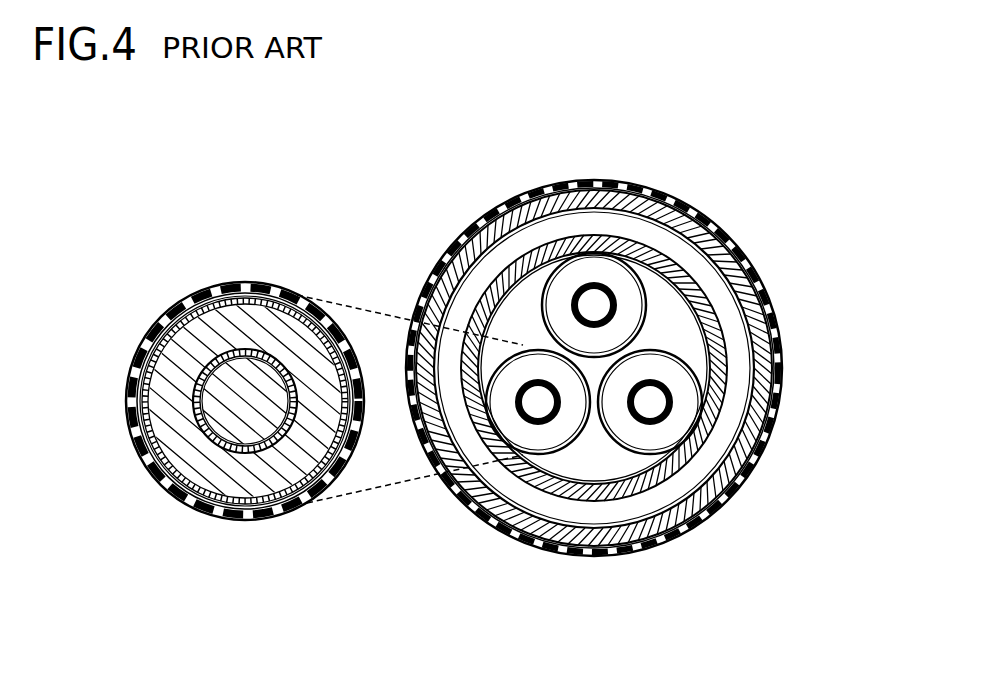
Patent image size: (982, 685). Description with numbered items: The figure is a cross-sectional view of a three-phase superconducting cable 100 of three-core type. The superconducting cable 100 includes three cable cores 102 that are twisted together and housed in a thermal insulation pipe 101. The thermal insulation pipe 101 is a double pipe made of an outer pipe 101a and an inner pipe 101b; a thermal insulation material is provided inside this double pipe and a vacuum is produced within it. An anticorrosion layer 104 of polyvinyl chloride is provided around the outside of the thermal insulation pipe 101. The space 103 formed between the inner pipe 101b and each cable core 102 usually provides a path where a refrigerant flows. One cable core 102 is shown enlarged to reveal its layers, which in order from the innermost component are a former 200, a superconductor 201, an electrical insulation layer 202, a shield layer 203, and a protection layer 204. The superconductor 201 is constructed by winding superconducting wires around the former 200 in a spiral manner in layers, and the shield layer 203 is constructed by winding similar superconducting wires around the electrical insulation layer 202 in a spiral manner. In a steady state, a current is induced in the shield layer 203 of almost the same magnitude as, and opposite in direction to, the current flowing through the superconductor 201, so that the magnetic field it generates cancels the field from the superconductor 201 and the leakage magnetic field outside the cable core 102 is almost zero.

The superconducting cable 100 is at (654, 386).
The thermal insulation pipe 101 is at (659, 339).
The outer pipe 101a is at (727, 283).
The inner pipe 101b is at (687, 220).
The cable core 102 is at (366, 344).
The space 103 is at (693, 347).
The anticorrosion layer 104 is at (779, 429).
The former 200 is at (160, 385).
The superconductor 201 is at (200, 417).
The electrical insulation layer 202 is at (153, 467).
The shield layer 203 is at (206, 512).
The protection layer 204 is at (268, 519).